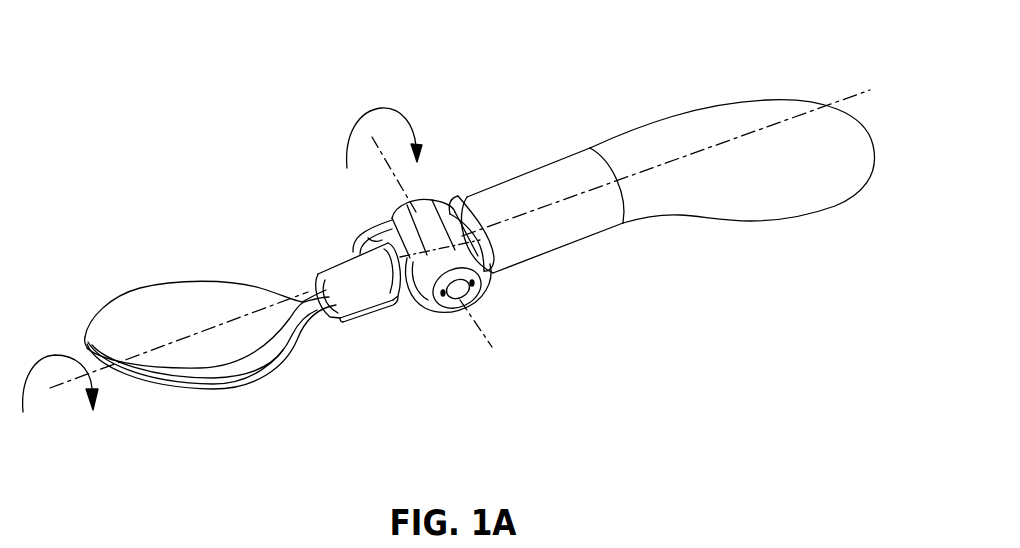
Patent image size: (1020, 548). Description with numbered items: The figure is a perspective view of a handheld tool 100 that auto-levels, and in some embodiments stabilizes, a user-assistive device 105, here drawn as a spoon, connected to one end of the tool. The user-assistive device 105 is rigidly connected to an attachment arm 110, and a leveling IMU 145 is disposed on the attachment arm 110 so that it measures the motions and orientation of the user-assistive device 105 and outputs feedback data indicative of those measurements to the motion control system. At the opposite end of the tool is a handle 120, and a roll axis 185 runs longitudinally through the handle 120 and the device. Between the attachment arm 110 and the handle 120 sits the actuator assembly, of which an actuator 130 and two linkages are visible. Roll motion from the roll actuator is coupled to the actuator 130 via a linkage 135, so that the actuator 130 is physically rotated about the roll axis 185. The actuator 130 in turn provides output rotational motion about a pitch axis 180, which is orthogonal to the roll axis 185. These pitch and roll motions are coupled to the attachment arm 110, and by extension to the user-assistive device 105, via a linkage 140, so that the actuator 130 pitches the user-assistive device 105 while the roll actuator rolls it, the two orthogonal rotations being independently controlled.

The handheld tool 100 is at (167, 68).
The user-assistive device 105 is at (211, 284).
The attachment arm 110 is at (347, 292).
The handle 120 is at (765, 222).
The actuator 130 is at (475, 296).
The linkage 135 is at (458, 196).
The linkage 140 is at (362, 243).
The leveling IMU 145 is at (352, 320).
The pitch axis 180 is at (492, 347).
The roll axis 185 is at (100, 368).